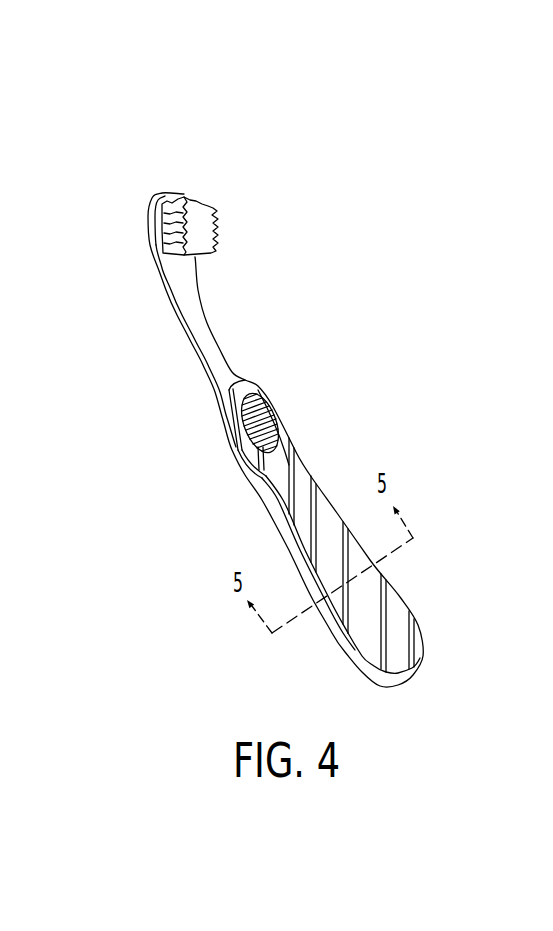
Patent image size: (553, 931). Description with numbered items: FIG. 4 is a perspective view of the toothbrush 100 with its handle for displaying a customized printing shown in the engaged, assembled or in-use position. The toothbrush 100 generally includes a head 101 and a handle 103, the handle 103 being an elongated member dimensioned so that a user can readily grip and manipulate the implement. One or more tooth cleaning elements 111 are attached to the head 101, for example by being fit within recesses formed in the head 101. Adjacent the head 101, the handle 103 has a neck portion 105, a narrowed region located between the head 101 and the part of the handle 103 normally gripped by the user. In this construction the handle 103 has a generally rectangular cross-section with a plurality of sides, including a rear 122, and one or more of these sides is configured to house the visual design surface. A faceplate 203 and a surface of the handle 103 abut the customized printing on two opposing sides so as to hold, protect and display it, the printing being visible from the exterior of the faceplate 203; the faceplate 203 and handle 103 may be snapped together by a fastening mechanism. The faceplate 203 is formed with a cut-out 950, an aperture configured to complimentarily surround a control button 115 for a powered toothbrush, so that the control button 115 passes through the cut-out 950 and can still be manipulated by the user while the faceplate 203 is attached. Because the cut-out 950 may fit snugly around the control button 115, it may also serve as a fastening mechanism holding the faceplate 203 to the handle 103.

The toothbrush 100 is at (106, 426).
The head 101 is at (210, 181).
The tooth cleaning elements 111 is at (219, 220).
The neck portion 105 is at (229, 312).
The handle 103 is at (191, 524).
The rear 122 is at (330, 653).
The cut-out 950 is at (256, 394).
The control button 115 is at (268, 428).
The faceplate 203 is at (400, 635).